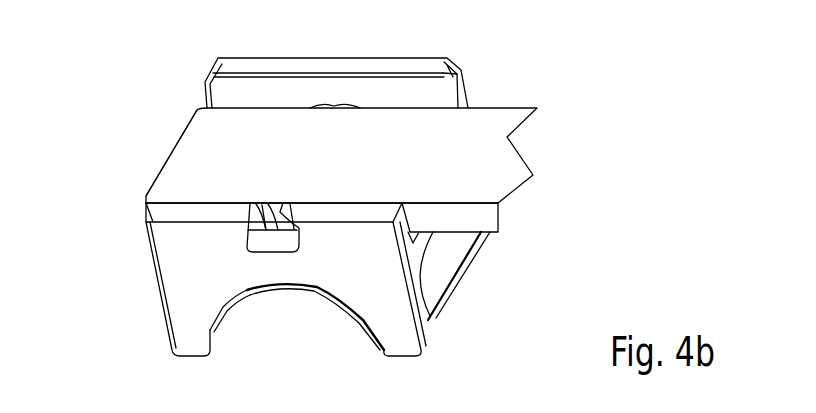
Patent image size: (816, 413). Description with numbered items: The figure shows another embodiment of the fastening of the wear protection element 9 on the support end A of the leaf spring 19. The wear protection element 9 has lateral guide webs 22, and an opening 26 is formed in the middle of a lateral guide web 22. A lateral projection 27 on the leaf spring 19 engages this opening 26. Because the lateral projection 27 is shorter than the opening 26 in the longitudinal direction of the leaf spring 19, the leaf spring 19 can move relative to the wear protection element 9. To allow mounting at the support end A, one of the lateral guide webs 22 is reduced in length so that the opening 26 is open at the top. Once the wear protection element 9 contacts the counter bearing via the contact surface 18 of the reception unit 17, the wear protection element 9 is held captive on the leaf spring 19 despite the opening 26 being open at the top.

The wear protection element 9 is at (340, 314).
The reception unit 17 is at (386, 285).
The contact surface 18 is at (220, 330).
The leaf spring 19 is at (463, 166).
The lateral guide webs 22 is at (433, 92).
The opening 26 is at (250, 232).
The lateral projection 27 is at (285, 205).
The support end A is at (158, 152).